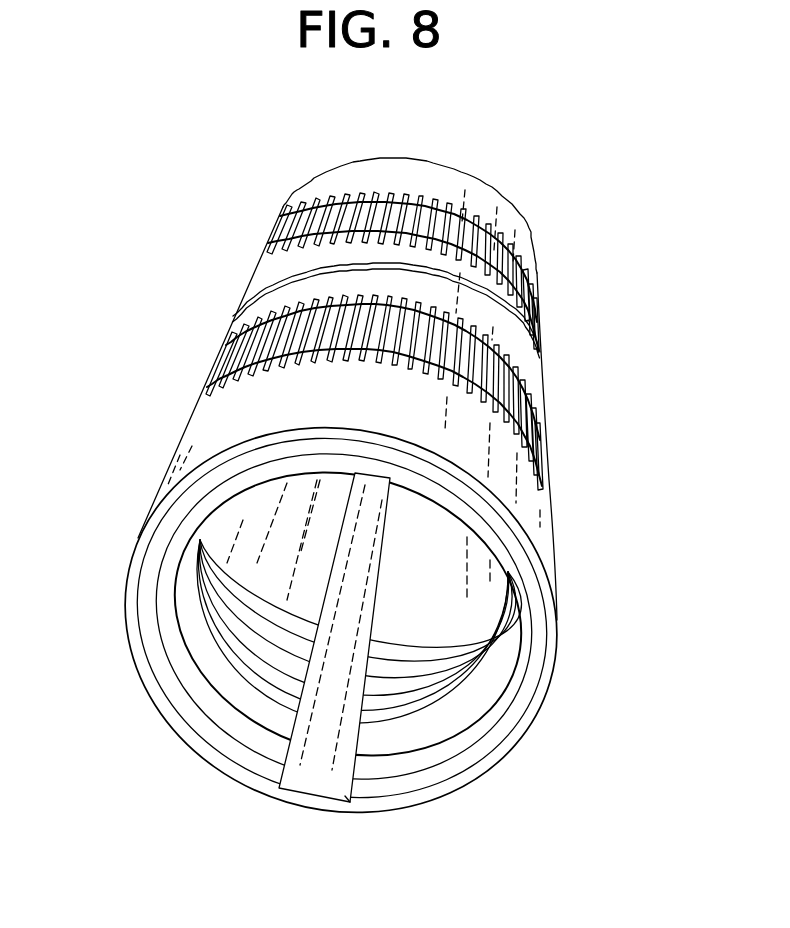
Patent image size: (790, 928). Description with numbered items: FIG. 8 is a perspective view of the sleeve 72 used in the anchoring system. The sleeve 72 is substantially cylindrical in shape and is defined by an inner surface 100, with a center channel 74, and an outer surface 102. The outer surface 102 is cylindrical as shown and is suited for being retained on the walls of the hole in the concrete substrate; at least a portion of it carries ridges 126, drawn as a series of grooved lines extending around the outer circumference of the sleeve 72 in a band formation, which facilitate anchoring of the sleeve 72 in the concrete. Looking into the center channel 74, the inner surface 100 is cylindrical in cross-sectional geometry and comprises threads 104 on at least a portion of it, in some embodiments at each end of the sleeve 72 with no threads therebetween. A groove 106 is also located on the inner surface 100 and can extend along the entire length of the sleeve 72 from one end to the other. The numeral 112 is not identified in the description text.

The sleeve 72 is at (597, 257).
The outer surface 102 is at (327, 258).
The ridges 126 is at (203, 388).
The center channel 74 is at (273, 593).
The inner surface 100 is at (457, 642).
The internal groove 112 is at (480, 722).
The threads 104 is at (220, 727).
The groove 106 is at (320, 785).